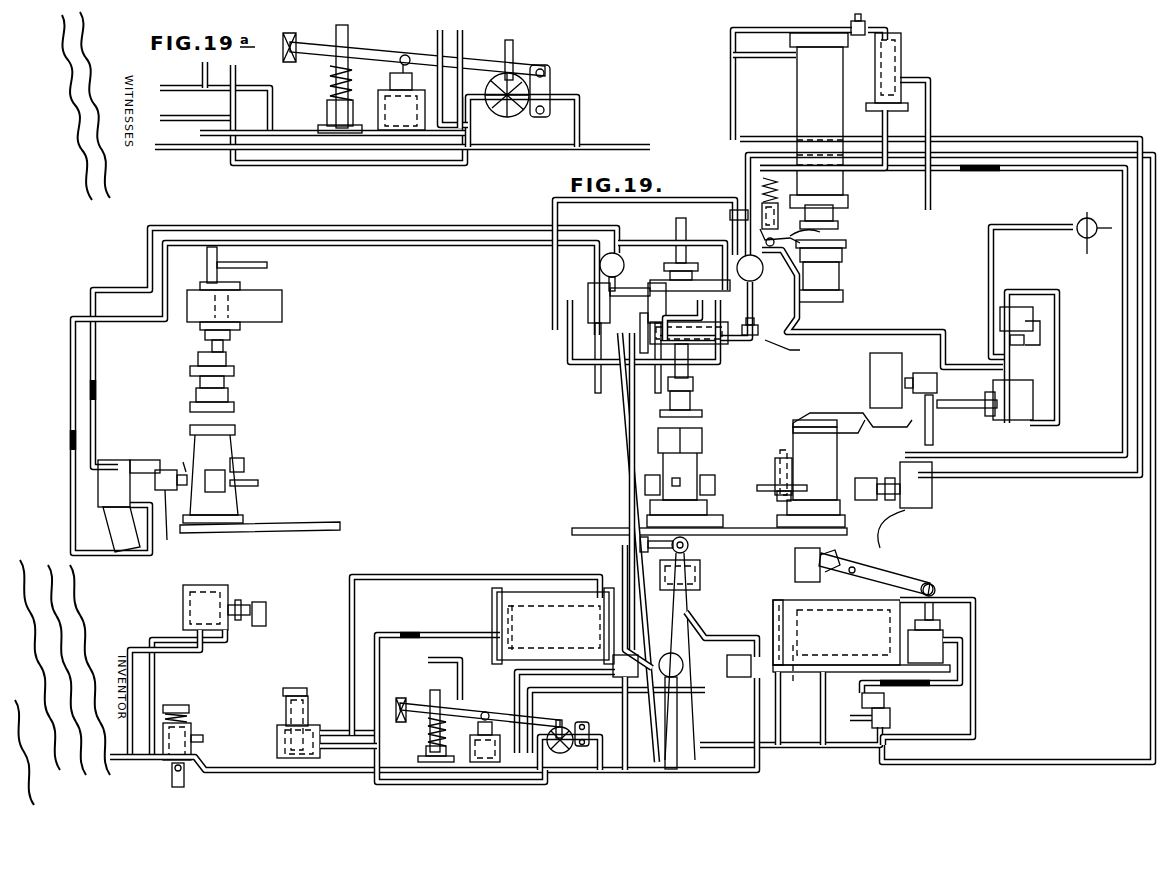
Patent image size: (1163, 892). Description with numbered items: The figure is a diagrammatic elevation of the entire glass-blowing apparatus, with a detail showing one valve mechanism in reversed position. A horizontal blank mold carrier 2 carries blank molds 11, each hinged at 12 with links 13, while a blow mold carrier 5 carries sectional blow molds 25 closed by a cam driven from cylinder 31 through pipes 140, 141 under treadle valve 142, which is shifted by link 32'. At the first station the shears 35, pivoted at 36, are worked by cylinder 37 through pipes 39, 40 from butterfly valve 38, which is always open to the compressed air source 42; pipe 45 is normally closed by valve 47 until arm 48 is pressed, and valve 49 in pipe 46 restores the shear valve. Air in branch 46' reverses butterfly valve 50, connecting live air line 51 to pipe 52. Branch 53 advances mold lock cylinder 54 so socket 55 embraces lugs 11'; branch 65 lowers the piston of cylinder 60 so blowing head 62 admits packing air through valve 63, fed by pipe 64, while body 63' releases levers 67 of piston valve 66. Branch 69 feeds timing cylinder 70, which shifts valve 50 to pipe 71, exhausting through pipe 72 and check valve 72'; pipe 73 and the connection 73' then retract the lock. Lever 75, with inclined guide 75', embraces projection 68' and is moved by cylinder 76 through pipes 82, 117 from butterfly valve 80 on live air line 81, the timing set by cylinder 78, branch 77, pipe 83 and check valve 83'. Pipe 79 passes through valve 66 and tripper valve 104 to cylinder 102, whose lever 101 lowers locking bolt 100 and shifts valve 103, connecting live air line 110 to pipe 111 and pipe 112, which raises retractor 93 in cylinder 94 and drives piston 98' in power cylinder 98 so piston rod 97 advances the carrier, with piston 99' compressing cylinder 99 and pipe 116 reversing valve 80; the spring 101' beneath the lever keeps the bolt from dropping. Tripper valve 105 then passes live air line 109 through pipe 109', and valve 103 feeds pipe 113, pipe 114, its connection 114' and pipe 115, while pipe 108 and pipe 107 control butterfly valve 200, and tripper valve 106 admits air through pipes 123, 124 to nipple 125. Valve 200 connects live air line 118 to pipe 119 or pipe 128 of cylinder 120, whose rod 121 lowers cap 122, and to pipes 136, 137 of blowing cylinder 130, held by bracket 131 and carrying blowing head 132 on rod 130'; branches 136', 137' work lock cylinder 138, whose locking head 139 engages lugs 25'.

In FIG. 19, the blank mold carrier 2 is at (600, 528).
In FIG. 19, the blow mold carrier 5 is at (312, 525).
In FIG. 19, the blank mold 11 is at (759, 473).
In FIG. 19, the lugs 11' is at (755, 473).
In FIG. 19, the hinge 12 is at (784, 458).
In FIG. 19, the links 13 is at (770, 492).
In FIG. 19, the blow mold 25 is at (226, 474).
In FIG. 19, the lugs 25' is at (171, 461).
In FIG. 19, the piston and cylinder 31 is at (215, 580).
In FIG. 19, the link 32' is at (156, 775).
In FIG. 19, the shears 35 is at (832, 415).
In FIG. 19, the pivot 36 is at (886, 353).
In FIG. 19, the cylinder 37 is at (1018, 392).
In FIG. 19, the valve 38 is at (1033, 318).
In FIG. 19, the pipe 39 is at (1058, 335).
In FIG. 19, the pipe 40 is at (1059, 362).
In FIG. 19, the source of compressed air 42 is at (1000, 340).
In FIG. 19, the pipe 45 is at (988, 272).
In FIG. 19, the pipe 46 is at (968, 349).
In FIG. 19, the branch pipe 46' is at (885, 309).
In FIG. 19, the valve 47 is at (1090, 219).
In FIG. 19, the arm 48 is at (1082, 248).
In FIG. 19, the valve 49 is at (923, 376).
In FIG. 19, the butterfly valve 50 is at (750, 268).
In FIG. 19, the live air line 51 is at (785, 335).
In FIG. 19, the pipe 52 is at (746, 164).
In FIG. 19, the branch 53 is at (1005, 130).
In FIG. 19, the mold lock cylinder 54 is at (932, 492).
In FIG. 19, the socket 55 is at (868, 500).
In FIG. 19, the cylinder 60 is at (797, 108).
In FIG. 19, the blowing head 62 is at (843, 296).
In FIG. 19, the valve 63 is at (840, 274).
In FIG. 19, the body 63' is at (852, 236).
In FIG. 19, the pipe 64 is at (835, 222).
In FIG. 19, the branch 65 is at (764, 58).
In FIG. 19, the piston valve 66 is at (762, 212).
In FIG. 19, the levers 67 is at (846, 247).
In FIG. 19, the annular projection 68' is at (801, 565).
In FIG. 19, the branch 69 is at (555, 205).
In FIG. 19, the cylinder 70 is at (665, 345).
In FIG. 19, the pipe 71 is at (745, 213).
In FIG. 19, the pipe 72 is at (882, 308).
In FIG. 19, the check valve 72' is at (780, 356).
In FIG. 19, the pipe 73 is at (942, 317).
In FIG. 19, the pipe 73' is at (980, 182).
In FIG. 19, the lever 75 is at (882, 552).
In FIG. 19, the inclined guide 75' is at (816, 592).
In FIG. 19, the cylinder 76 is at (943, 635).
In FIG. 19, the branch 77 is at (889, 128).
In FIG. 19, the cylinder 78 is at (901, 64).
In FIG. 19a, the pipe 79 is at (440, 32).
In FIG. 19, the pipe 79 is at (931, 100).
In FIG. 19, the butterfly valve 80 is at (891, 720).
In FIG. 19, the live air line 81 is at (858, 716).
In FIG. 19, the pipe 82 is at (928, 685).
In FIG. 19, the pipe 83 is at (789, 78).
In FIG. 19, the check valve 83' is at (892, 25).
In FIG. 19, the retractor 93 is at (285, 692).
In FIG. 19, the cylinder 94 is at (277, 742).
In FIG. 19, the piston rod 97 is at (773, 617).
In FIG. 19, the power cylinder 98 is at (553, 609).
In FIG. 19, the piston 98' is at (483, 622).
In FIG. 19, the compression cylinder 99 is at (855, 660).
In FIG. 19, the piston 99' is at (798, 670).
In FIG. 19a, the locking bolt 100 is at (350, 32).
In FIG. 19, the locking bolt 100 is at (449, 705).
In FIG. 19a, the lever 101 is at (414, 54).
In FIG. 19, the lever 101 is at (478, 701).
In FIG. 19a, the spring 101' is at (325, 99).
In FIG. 19, the spring 101' is at (429, 740).
In FIG. 19a, the cylinder 102 is at (400, 115).
In FIG. 19, the cylinder 102 is at (479, 737).
In FIG. 19a, the valve 103 is at (550, 85).
In FIG. 19, the valve 103 is at (590, 744).
In FIG. 19, the tripper valve 104 is at (625, 680).
In FIG. 19, the tripper valve 105 is at (742, 678).
In FIG. 19, the tripper valve 106 is at (680, 675).
In FIG. 19, the pipe 107 is at (600, 428).
In FIG. 19, the pipe 108 is at (628, 418).
In FIG. 19, the live air line 109 is at (721, 629).
In FIG. 19a, the pipe 109' is at (492, 68).
In FIG. 19, the pipe 109' is at (541, 712).
In FIG. 19a, the live air line 110 is at (514, 50).
In FIG. 19, the live air line 110 is at (551, 722).
In FIG. 19a, the pipe 111 is at (198, 122).
In FIG. 19, the pipe 111 is at (360, 750).
In FIG. 19, the pipe 112 is at (427, 628).
In FIG. 19a, the pipe 113 is at (165, 152).
In FIG. 19, the pipe 113 is at (632, 774).
In FIG. 19, the pipe 114 is at (346, 714).
In FIG. 19a, the pipe 114' is at (215, 97).
In FIG. 19, the pipe 115 is at (488, 568).
In FIG. 19, the pipe 116 is at (975, 686).
In FIG. 19, the pipe 117 is at (963, 660).
In FIG. 19, the live air line 118 is at (588, 290).
In FIG. 19, the pipe 119 is at (650, 240).
In FIG. 19, the cylinder 120 is at (662, 297).
In FIG. 19, the piston rod 121 is at (690, 365).
In FIG. 19, the cap 122 is at (703, 411).
In FIG. 19, the pipe 123 is at (428, 660).
In FIG. 19, the pipe 124 is at (624, 556).
In FIG. 19, the nipple 125 is at (690, 546).
In FIG. 19, the pipe 128 is at (568, 366).
In FIG. 19, the cylinder 130 is at (185, 333).
In FIG. 19, the piston rod 130' is at (252, 265).
In FIG. 19, the bracket 131 is at (283, 306).
In FIG. 19, the blowing head 132 is at (228, 395).
In FIG. 19, the pipe 136 is at (335, 398).
In FIG. 19, the branch 136' is at (44, 440).
In FIG. 19, the pipe 137 is at (355, 332).
In FIG. 19, the pipe 137' is at (120, 390).
In FIG. 19, the cylinder 138 is at (117, 470).
In FIG. 19, the locking head 139 is at (173, 523).
In FIG. 19, the pipe 140 is at (226, 640).
In FIG. 19, the pipe 141 is at (153, 663).
In FIG. 19, the treadle valve 142 is at (190, 725).
In FIG. 19, the butterfly valve 200 is at (619, 258).